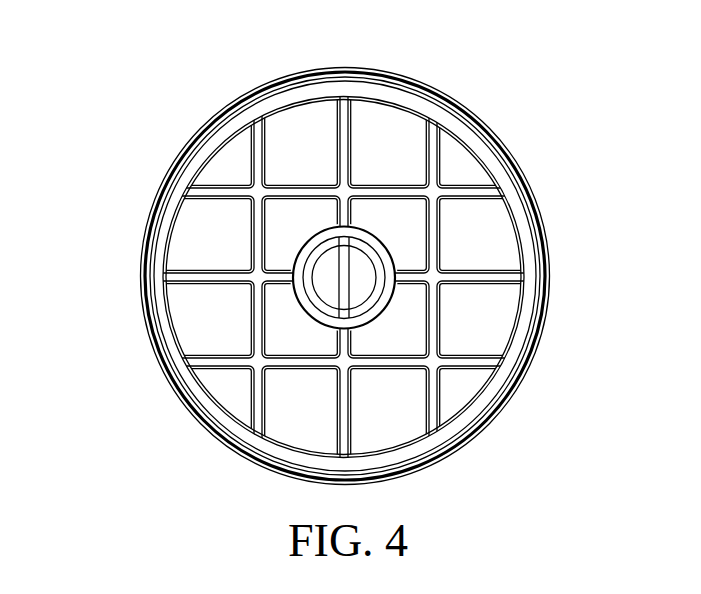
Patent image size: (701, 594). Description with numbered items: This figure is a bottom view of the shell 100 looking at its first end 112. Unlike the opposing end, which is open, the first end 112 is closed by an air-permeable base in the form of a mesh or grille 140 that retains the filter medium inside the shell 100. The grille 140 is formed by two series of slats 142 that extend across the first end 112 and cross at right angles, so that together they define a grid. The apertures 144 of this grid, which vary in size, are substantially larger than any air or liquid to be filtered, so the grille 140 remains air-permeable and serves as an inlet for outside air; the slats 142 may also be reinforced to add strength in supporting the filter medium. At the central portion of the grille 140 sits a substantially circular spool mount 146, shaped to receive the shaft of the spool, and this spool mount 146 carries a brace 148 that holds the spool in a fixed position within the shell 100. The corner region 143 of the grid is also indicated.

The shell 100 is at (198, 58).
The first end 112 is at (398, 77).
The grille 140 is at (193, 167).
The slats 142 is at (257, 413).
The rib corner 143 is at (437, 162).
The apertures 144 is at (207, 318).
The spool mount 146 is at (383, 292).
The brace 148 is at (343, 271).